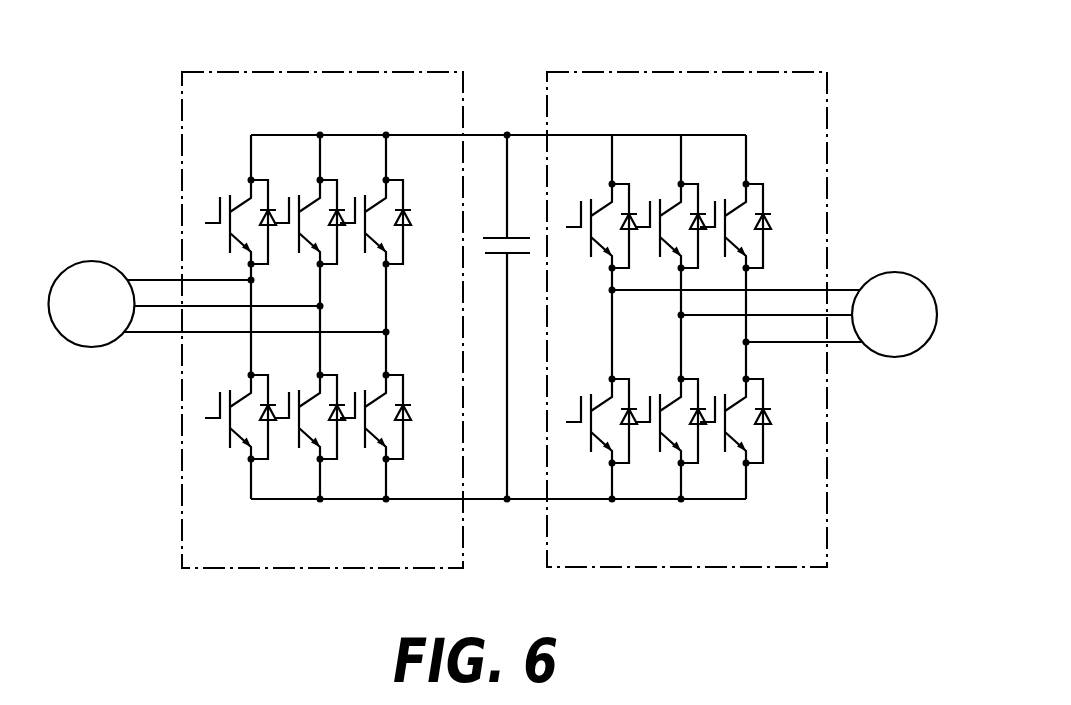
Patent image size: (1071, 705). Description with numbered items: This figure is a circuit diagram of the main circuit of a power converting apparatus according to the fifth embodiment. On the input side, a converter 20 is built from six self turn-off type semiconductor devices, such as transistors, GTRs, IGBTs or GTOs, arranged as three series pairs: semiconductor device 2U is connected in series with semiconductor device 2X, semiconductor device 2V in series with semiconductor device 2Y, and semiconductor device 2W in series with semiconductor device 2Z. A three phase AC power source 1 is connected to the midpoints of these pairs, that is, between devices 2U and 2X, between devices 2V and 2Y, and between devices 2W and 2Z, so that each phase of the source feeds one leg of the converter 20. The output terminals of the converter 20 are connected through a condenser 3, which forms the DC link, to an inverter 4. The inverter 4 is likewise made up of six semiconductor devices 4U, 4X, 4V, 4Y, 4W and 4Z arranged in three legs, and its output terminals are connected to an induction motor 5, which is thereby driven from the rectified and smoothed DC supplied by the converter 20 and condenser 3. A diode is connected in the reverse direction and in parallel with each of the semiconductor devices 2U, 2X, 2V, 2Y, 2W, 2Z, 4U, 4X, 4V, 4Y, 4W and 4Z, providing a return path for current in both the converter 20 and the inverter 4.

The three phase AC power source 1 is at (102, 262).
The converter 20 is at (343, 72).
The self turn-off type semiconductor device 2U is at (224, 207).
The self turn-off type semiconductor device 2V is at (291, 204).
The self turn-off type semiconductor device 2W is at (357, 204).
The self turn-off type semiconductor device 2X is at (221, 399).
The self turn-off type semiconductor device 2Y is at (289, 399).
The self turn-off type semiconductor device 2Z is at (356, 395).
The condenser 3 is at (520, 236).
The inverter 4 is at (677, 72).
The semiconductor device 4U is at (581, 213).
The semiconductor device 4V is at (650, 207).
The semiconductor device 4W is at (716, 207).
The semiconductor device 4X is at (582, 405).
The semiconductor device 4Y is at (650, 400).
The semiconductor device 4Z is at (715, 395).
The induction motor 5 is at (903, 272).